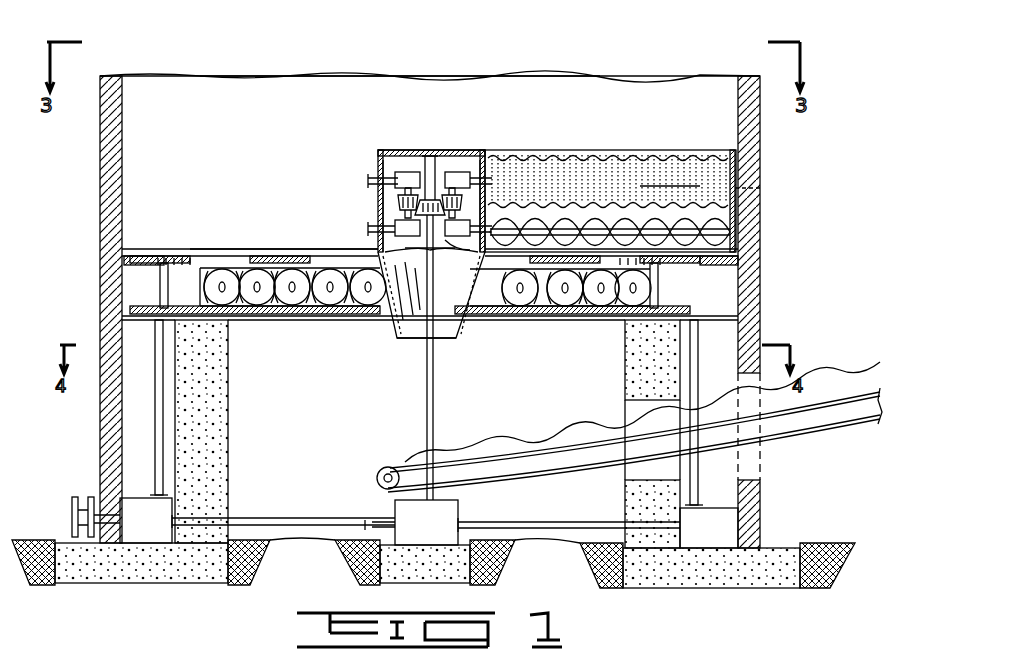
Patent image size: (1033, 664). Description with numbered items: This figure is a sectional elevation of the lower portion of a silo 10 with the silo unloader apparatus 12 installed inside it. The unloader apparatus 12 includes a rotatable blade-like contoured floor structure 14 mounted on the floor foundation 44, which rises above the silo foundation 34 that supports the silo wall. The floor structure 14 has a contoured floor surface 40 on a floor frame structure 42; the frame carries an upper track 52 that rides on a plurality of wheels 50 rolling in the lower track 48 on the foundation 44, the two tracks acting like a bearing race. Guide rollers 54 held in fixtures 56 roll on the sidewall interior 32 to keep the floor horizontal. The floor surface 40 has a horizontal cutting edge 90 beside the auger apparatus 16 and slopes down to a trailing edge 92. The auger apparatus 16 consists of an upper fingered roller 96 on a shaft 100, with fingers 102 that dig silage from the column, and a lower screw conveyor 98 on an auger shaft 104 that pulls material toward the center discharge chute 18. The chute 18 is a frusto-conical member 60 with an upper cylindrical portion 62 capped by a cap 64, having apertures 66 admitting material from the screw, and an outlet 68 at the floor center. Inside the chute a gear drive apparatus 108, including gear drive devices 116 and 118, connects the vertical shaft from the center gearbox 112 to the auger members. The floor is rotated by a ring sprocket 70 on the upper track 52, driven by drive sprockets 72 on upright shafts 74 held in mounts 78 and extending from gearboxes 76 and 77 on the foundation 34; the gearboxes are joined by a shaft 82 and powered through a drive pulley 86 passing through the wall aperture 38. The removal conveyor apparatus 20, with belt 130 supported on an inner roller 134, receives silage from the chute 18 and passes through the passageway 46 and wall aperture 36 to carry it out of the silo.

The silo 10 is at (255, 48).
The silo unloader apparatus 12 is at (433, 60).
The rotatable floor structure 14 is at (148, 203).
The auger apparatus 16 is at (598, 140).
The discharge chute 18 is at (378, 340).
The removal conveyor apparatus 20 is at (850, 360).
The sidewall interior 32 is at (276, 70).
The silo foundation 34 is at (130, 578).
The aperture 36 is at (766, 468).
The aperture 38 is at (110, 500).
The contoured floor surface 40 is at (628, 373).
The floor frame structure 42 is at (118, 244).
The floor foundation 44 is at (228, 475).
The passageway 46 is at (690, 388).
The lower track 48 is at (604, 303).
The wheels 50 is at (566, 300).
The upper track 52 is at (522, 303).
The guide rollers 54 is at (132, 258).
The guide roller fixtures 56 is at (124, 266).
The frusto-conical member 60 is at (395, 322).
The upper cylindrical portion 62 is at (392, 175).
The cap 64 is at (395, 150).
The apertures 66 is at (457, 257).
The discharge chute outlet 68 is at (430, 330).
The ring sprocket 70 is at (182, 264).
The drive sprockets 72 is at (164, 268).
The upright shafts 74 is at (150, 337).
The gearbox 76 is at (722, 512).
The gearbox 77 is at (165, 555).
The mounts 78 is at (135, 306).
The shaft 82 is at (268, 522).
The drive pulley 86 is at (72, 512).
The cutting edge 90 is at (600, 150).
The trailing edge 92 is at (266, 252).
The fingered roller 96 is at (738, 172).
The screw conveyor 98 is at (720, 212).
The shaft 100 is at (434, 380).
The fingers 102 is at (662, 140).
The auger shaft 104 is at (728, 234).
The gear drive apparatus 108 is at (445, 165).
The gearbox 112 is at (462, 510).
The gear drive device 116 is at (486, 200).
The gear drive device 118 is at (368, 182).
The conveyor belt 130 is at (410, 465).
The roller 134 is at (392, 470).